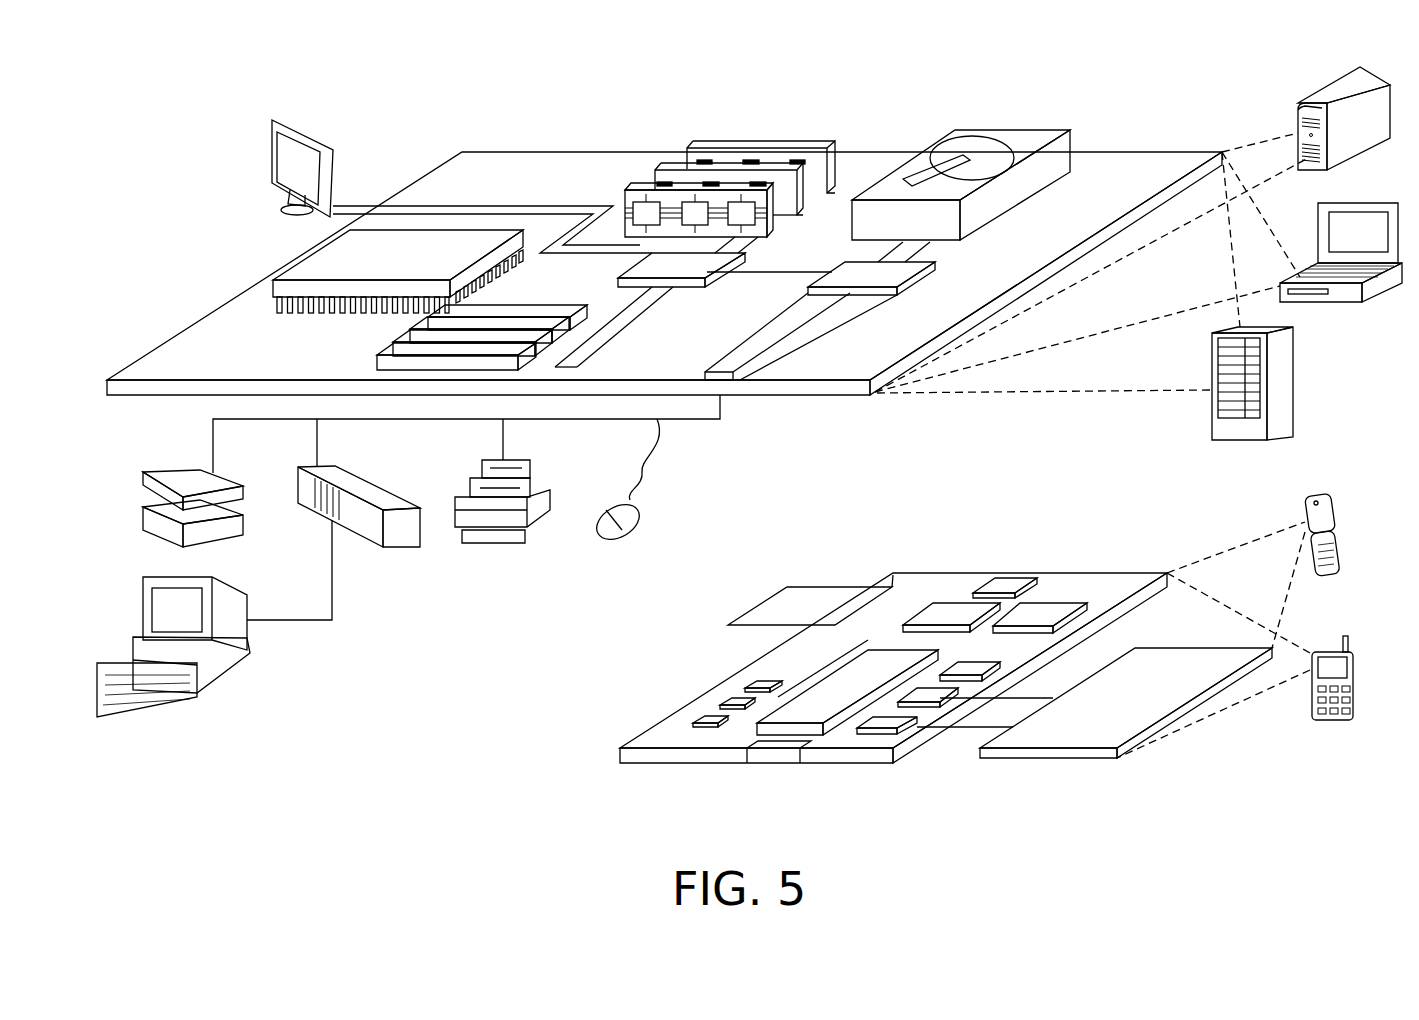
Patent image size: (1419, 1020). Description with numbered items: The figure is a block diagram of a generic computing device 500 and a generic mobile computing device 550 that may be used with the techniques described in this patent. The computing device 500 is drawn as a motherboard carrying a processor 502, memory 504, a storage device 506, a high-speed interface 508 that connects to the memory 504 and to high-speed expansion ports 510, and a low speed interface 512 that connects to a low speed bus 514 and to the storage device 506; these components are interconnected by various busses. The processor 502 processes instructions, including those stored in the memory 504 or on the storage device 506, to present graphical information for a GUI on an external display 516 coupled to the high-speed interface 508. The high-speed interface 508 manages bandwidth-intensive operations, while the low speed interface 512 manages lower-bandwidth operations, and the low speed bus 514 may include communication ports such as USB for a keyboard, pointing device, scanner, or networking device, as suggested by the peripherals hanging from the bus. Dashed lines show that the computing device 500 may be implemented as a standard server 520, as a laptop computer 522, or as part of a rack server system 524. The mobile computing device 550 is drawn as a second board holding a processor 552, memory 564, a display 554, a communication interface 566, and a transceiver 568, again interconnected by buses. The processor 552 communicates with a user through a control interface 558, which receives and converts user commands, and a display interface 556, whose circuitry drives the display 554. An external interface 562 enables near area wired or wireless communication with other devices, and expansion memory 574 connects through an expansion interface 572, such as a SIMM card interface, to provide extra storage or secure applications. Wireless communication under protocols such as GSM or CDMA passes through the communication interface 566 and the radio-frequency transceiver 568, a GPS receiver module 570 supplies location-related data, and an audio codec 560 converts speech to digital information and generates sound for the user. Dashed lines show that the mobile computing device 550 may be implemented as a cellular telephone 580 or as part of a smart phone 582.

The computing device 500 is at (408, 95).
The processor 502 is at (300, 260).
The memory 504 is at (762, 145).
The storage device 506 is at (1003, 125).
The high-speed interface 508 is at (693, 263).
The high-speed expansion ports 510 is at (402, 343).
The low speed interface 512 is at (843, 270).
The low speed bus 514 is at (727, 363).
The display 516 is at (277, 117).
The standard server 520 is at (1320, 95).
The laptop computer 522 is at (1378, 200).
The rack server system 524 is at (1297, 382).
The mobile computer device 550 is at (575, 777).
The processor 552 is at (815, 700).
The display 554 is at (1165, 663).
The display interface 556 is at (895, 723).
The control interface 558 is at (935, 695).
The audio codec 560 is at (975, 663).
The external interface 562 is at (773, 752).
The memory 564 is at (723, 703).
The communication interface 566 is at (952, 608).
The transceiver 568 is at (1047, 608).
The GPS receiver module 570 is at (1005, 580).
The expansion interface 572 is at (873, 585).
The expansion memory 574 is at (788, 585).
The cellular telephone 580 is at (1317, 493).
The smart phone 582 is at (1330, 648).